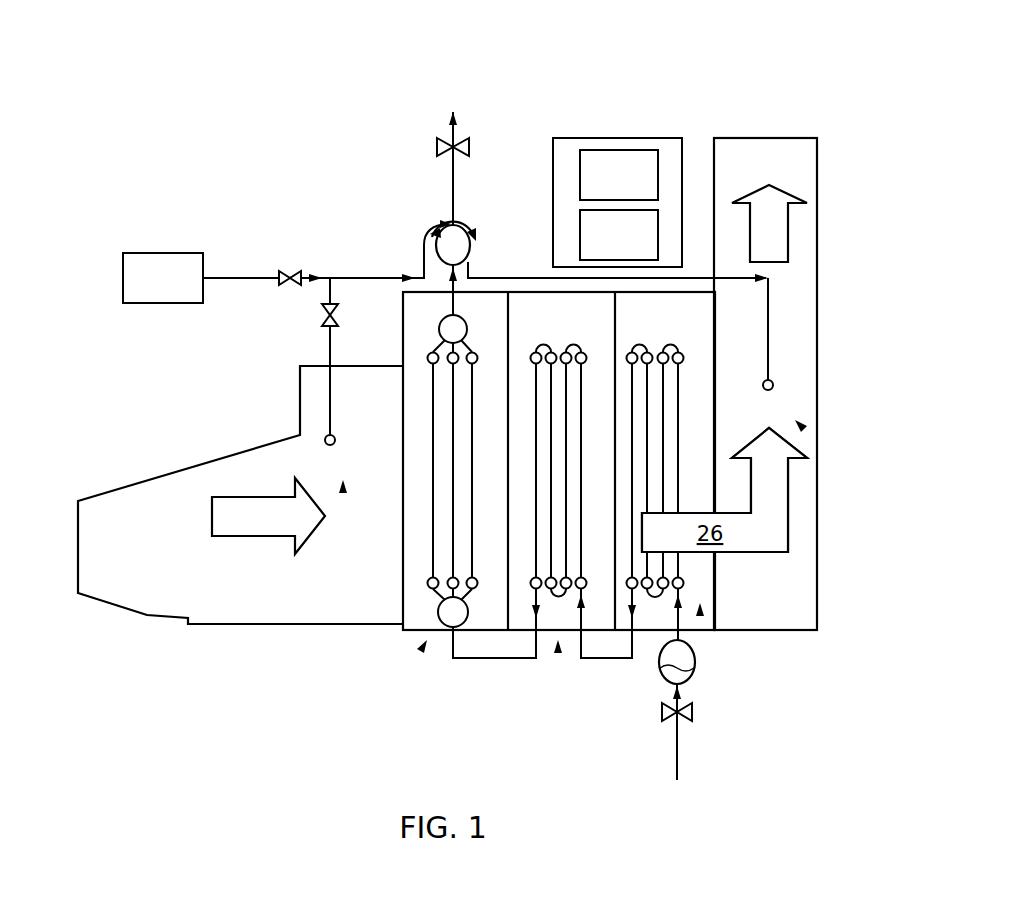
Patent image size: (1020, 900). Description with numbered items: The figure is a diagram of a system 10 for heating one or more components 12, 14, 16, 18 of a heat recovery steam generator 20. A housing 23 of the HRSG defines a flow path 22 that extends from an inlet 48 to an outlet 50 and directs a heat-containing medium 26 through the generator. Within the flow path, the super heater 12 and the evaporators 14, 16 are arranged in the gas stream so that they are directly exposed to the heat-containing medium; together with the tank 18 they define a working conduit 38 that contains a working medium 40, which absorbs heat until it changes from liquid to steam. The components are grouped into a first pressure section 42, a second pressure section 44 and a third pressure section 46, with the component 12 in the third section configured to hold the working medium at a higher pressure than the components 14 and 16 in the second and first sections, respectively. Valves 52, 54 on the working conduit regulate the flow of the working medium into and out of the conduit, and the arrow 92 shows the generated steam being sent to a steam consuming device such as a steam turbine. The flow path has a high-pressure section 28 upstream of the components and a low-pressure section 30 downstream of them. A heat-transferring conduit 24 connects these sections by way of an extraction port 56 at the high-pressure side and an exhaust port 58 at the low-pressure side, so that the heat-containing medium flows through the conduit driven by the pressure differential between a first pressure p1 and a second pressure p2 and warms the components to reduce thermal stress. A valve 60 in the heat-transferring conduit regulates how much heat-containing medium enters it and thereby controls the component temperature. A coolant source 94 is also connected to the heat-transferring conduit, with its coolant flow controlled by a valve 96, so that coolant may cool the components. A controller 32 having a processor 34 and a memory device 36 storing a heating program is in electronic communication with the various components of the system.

The system 10 is at (315, 172).
The super heater 12 is at (443, 447).
The evaporator 14 is at (545, 436).
The evaporator 16 is at (648, 436).
The tank 18 is at (470, 235).
The heat recovery steam generator 20 is at (150, 45).
The flow path 22 is at (714, 172).
The housing 23 is at (242, 200).
The heat-transferring conduit 24 is at (423, 225).
The heat-containing medium 26 is at (509, 369).
The high-pressure section 28 is at (344, 492).
The low-pressure section 30 is at (806, 430).
The controller 32 is at (585, 138).
The processor 34 is at (619, 175).
The memory device 36 is at (619, 235).
The working conduit 38 is at (452, 192).
The working medium 40 is at (696, 676).
The first pressure section 42 is at (702, 616).
The second pressure section 44 is at (556, 653).
The third pressure section 46 is at (420, 652).
The inlet 48 is at (76, 530).
The outlet 50 is at (817, 178).
The valve 52 is at (692, 712).
The valve 54 is at (472, 148).
The extraction port 56 is at (325, 437).
The exhaust port 58 is at (775, 385).
The valve 60 is at (322, 315).
The arrow 92 is at (450, 118).
The coolant source 94 is at (163, 278).
The valve 96 is at (290, 270).